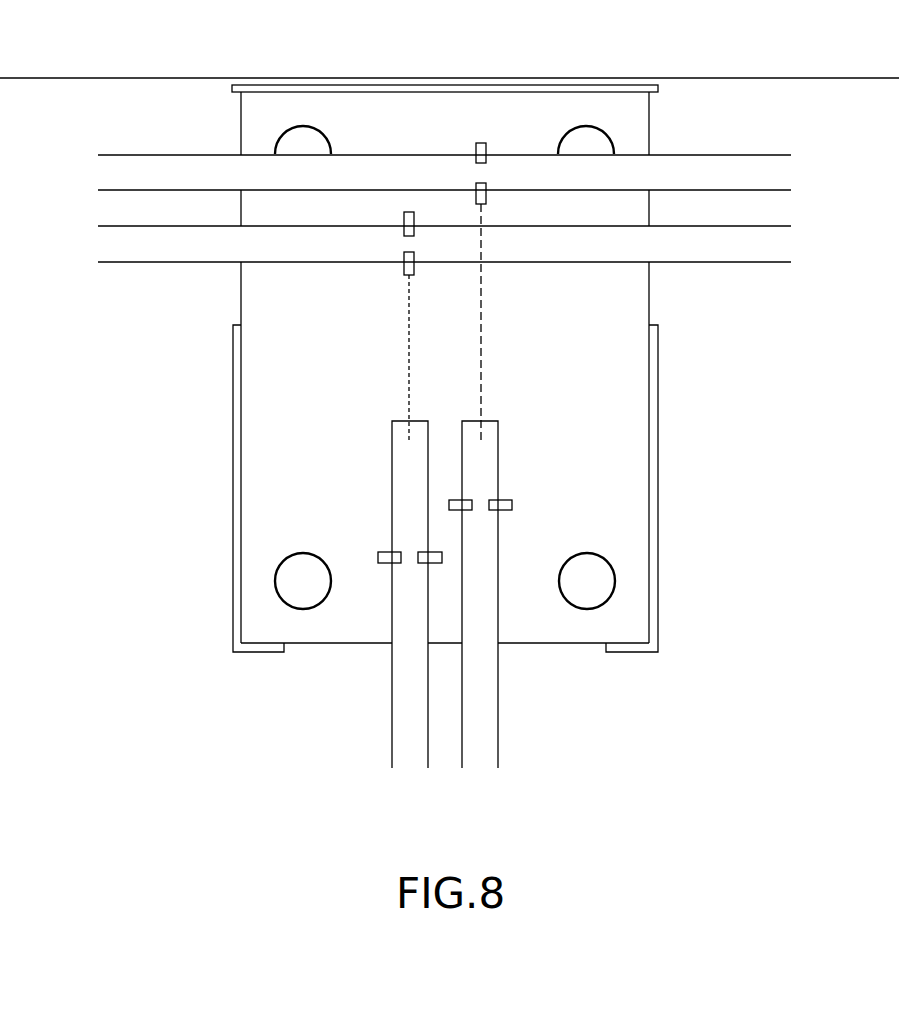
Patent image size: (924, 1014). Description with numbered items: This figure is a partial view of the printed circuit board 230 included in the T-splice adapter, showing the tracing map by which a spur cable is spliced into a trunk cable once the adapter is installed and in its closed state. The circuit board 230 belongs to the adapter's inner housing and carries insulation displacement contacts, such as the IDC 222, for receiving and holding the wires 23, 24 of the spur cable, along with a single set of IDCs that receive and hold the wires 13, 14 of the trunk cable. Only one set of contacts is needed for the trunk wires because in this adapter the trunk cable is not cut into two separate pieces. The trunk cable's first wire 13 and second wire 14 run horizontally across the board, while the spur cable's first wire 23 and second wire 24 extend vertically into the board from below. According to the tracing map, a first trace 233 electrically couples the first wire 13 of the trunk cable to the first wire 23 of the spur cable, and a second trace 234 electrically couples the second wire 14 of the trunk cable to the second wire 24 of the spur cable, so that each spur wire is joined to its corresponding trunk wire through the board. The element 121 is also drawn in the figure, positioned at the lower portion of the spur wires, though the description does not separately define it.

The first wire of the trunk cable 13 is at (139, 245).
The second wire of the trunk cable 14 is at (186, 170).
The first wire of the spur cable 23 is at (404, 487).
The second wire of the spur cable 24 is at (482, 588).
The lower clip 121 is at (387, 563).
The IDC 222 is at (510, 505).
The circuit board 230 is at (567, 464).
The first trace 233 is at (410, 339).
The second trace 234 is at (482, 313).